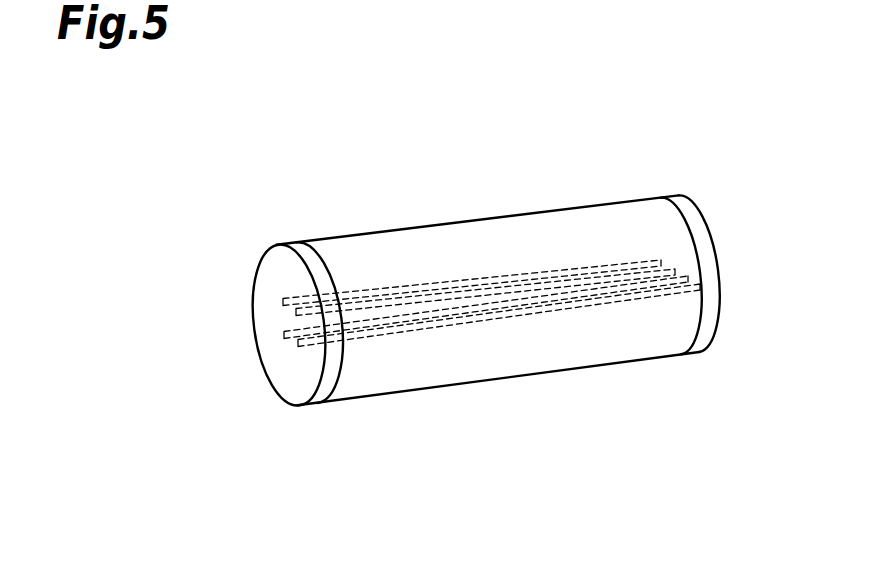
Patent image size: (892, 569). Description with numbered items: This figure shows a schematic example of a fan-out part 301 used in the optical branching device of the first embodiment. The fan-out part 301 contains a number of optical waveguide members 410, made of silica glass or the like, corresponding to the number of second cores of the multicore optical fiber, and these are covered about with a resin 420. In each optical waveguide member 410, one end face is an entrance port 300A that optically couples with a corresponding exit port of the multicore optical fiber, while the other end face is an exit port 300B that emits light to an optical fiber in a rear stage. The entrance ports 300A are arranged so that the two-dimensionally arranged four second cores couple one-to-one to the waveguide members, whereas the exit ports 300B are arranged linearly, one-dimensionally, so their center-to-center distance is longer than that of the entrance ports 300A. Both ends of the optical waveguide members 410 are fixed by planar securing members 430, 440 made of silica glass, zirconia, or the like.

The fan-out part 301 is at (463, 269).
The resin 420 is at (482, 243).
The planar securing member 430 is at (329, 378).
The planar securing member 440 is at (705, 330).
The optical waveguide member 410 is at (511, 332).
The entrance port 300A is at (278, 303).
The exit port 300B is at (719, 282).